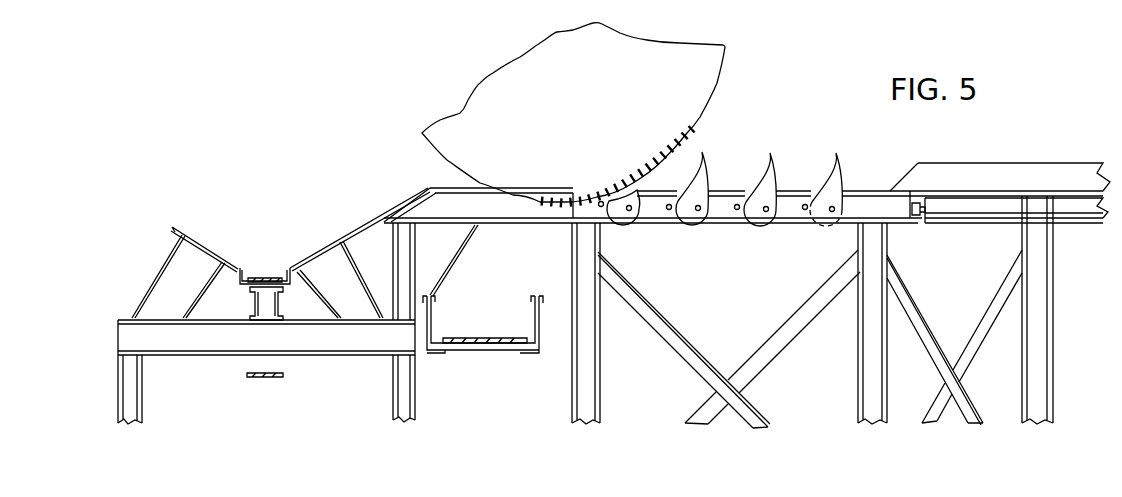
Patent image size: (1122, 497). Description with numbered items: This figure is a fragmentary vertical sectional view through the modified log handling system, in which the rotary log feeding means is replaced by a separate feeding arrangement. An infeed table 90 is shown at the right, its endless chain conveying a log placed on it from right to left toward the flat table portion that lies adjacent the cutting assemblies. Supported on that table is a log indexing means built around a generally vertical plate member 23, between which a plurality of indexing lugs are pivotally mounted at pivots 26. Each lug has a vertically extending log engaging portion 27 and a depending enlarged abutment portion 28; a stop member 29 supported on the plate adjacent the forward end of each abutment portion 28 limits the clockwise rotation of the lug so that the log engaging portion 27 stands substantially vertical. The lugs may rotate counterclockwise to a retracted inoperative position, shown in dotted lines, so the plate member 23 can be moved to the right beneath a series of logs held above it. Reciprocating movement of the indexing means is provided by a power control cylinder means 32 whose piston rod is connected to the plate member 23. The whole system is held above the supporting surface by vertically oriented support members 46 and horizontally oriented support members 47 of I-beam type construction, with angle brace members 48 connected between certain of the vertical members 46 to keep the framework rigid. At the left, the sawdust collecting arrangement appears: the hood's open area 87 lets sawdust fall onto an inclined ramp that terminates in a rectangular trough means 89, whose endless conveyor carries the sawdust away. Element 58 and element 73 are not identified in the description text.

The workpiece 58 is at (580, 88).
The open area 87 is at (354, 226).
The trough means 89 is at (277, 274).
The horizontally oriented support member 47 is at (359, 356).
The tray 73 is at (490, 334).
The vertically oriented support member 46 is at (416, 397).
The angle brace member 48 is at (666, 329).
The pivot 26 is at (737, 201).
The log engaging portion 27 is at (706, 162).
The abutment portion 28 is at (693, 224).
The stop member 29 is at (667, 211).
The plate member 23 is at (895, 223).
The infeed table 90 is at (1039, 157).
The power control cylinder means 32 is at (1078, 222).